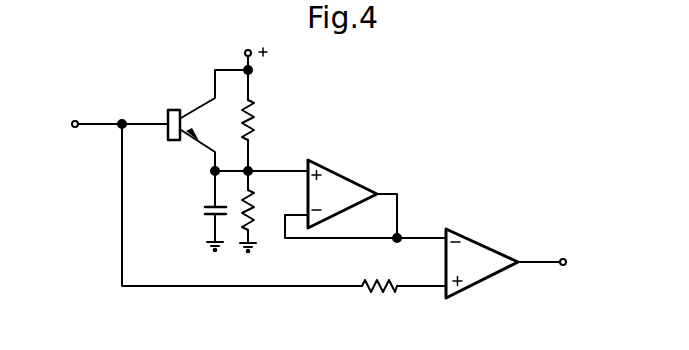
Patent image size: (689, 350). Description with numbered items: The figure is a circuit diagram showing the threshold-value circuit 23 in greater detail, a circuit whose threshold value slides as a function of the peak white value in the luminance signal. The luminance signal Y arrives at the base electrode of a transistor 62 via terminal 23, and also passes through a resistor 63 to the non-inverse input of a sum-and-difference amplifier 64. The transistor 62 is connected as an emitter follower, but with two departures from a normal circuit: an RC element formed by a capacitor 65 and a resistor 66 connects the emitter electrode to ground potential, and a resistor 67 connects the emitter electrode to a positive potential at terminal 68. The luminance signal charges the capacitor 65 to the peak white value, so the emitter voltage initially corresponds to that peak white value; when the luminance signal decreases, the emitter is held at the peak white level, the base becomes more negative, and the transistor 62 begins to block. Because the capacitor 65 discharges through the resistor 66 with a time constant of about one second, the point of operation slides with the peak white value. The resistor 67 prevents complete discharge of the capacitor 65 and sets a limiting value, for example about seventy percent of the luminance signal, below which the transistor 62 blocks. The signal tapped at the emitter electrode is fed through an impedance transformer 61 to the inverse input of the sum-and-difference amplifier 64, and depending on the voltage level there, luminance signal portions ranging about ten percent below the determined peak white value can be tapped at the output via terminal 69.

The threshold-value circuit / terminal 23 is at (358, 86).
The impedance transformer 61 is at (341, 192).
The transistor 62 is at (204, 120).
The resistor 63 is at (379, 290).
The sum-and-difference amplifier 64 is at (477, 252).
The capacitor 65 is at (196, 211).
The resistor 66 is at (253, 217).
The resistor 67 is at (254, 127).
The terminal 68 is at (249, 46).
The terminal 69 is at (563, 263).